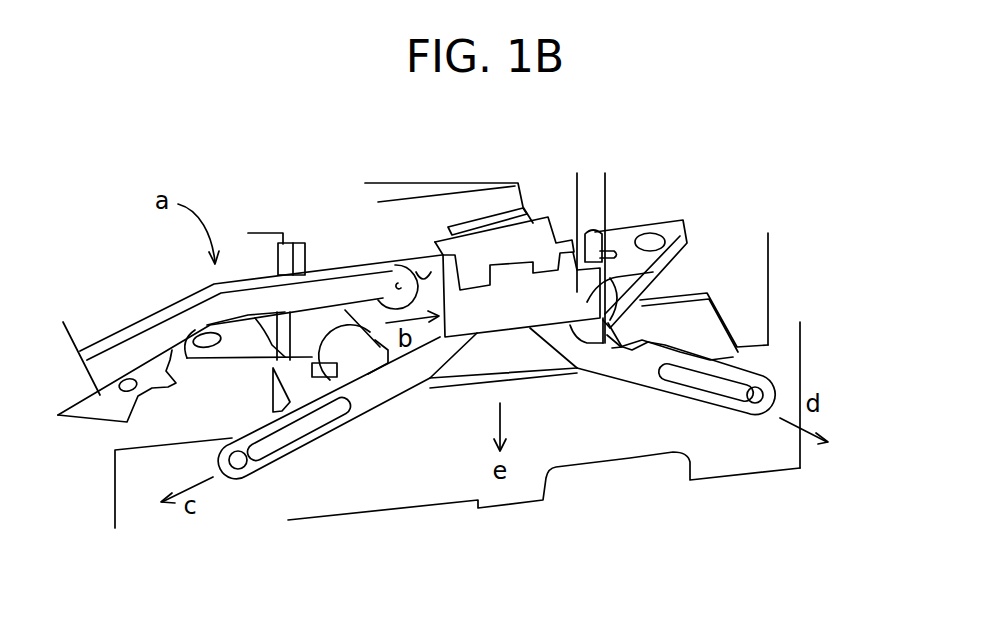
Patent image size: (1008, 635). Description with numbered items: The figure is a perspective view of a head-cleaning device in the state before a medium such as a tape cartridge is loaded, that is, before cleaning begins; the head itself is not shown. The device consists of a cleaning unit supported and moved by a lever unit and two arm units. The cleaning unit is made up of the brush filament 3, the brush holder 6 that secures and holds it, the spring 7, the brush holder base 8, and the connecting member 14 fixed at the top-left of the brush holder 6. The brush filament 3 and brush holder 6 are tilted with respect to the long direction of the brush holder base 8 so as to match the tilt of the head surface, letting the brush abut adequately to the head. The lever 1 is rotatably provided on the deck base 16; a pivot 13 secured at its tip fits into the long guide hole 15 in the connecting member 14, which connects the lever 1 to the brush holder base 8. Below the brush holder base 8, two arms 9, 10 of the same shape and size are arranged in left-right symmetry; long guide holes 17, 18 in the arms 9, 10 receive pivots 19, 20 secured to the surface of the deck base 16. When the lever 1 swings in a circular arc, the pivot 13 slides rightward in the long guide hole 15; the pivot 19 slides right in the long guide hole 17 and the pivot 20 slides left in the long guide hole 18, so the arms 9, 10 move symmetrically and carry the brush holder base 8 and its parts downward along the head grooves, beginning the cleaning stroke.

The lever 1 is at (150, 338).
The brush filament 3 is at (527, 212).
The brush holder 6 is at (563, 222).
The spring 7 is at (607, 232).
The brush holder base 8 is at (655, 272).
The arm 9 is at (383, 400).
The arm 10 is at (630, 370).
The pivot 13 is at (398, 284).
The connecting member 14 is at (418, 262).
The long guide hole 15 is at (424, 280).
The deck base 16 is at (440, 493).
The long guide hole 17 is at (308, 428).
The long guide hole 18 is at (697, 380).
The pivot 19 is at (262, 462).
The pivot 20 is at (755, 417).